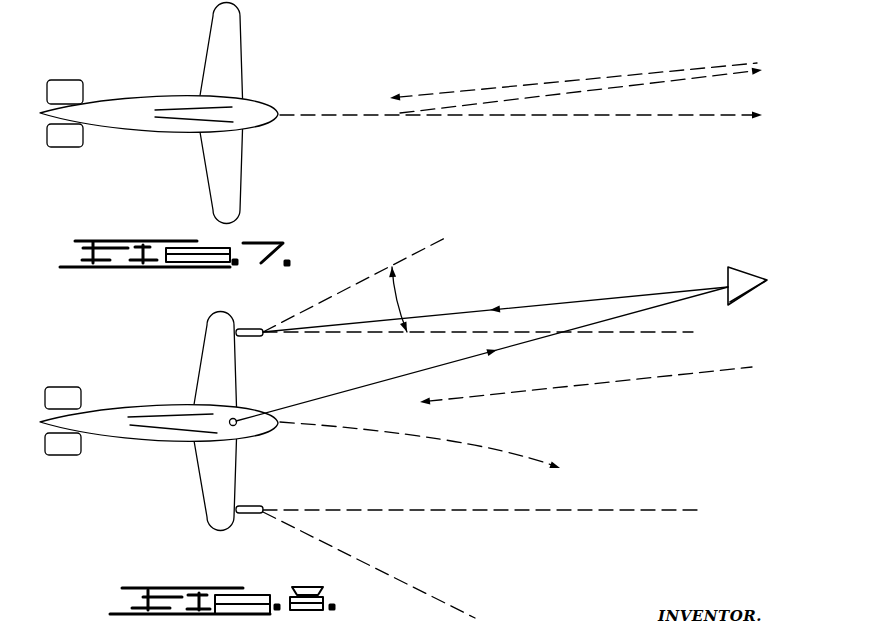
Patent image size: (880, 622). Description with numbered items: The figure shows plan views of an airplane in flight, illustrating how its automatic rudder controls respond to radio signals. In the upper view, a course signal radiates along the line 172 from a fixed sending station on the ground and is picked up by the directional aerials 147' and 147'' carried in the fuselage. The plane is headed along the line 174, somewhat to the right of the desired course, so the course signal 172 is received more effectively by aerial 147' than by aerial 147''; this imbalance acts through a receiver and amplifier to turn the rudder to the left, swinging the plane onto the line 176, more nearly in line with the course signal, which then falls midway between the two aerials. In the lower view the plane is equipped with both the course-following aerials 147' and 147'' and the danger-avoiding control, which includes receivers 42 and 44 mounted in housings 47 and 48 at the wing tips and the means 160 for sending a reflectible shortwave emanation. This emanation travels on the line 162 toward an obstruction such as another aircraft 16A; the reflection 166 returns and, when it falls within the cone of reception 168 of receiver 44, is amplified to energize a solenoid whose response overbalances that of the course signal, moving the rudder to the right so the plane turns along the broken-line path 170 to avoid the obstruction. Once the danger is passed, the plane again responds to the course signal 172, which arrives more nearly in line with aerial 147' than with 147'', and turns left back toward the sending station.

In FIG. 7, the directional aerial 147' is at (179, 87).
In FIG. 8, the directional aerial 147' is at (162, 390).
In FIG. 7, the directional aerial 147'' is at (170, 140).
In FIG. 8, the directional aerial 147'' is at (159, 450).
In FIG. 7, the course signal line 172 is at (540, 83).
In FIG. 8, the course signal line 172 is at (528, 392).
In FIG. 7, the heading line 174 is at (577, 115).
In FIG. 7, the corrected course line 176 is at (610, 90).
In FIG. 8, the wing-tip housing (upper) 47 is at (247, 328).
In FIG. 8, the receiver 44 is at (263, 332).
In FIG. 8, the wing-tip housing (lower) 48 is at (248, 507).
In FIG. 8, the receiver 42 is at (263, 510).
In FIG. 8, the signal transmitting means 160 is at (236, 419).
In FIG. 8, the wave emanation line 162 is at (425, 370).
In FIG. 8, the reflected signal 166 is at (522, 307).
In FIG. 8, the cone of reception 168 is at (355, 284).
In FIG. 8, the target aircraft 16A is at (757, 248).
In FIG. 8, the avoidance path 170 is at (443, 438).